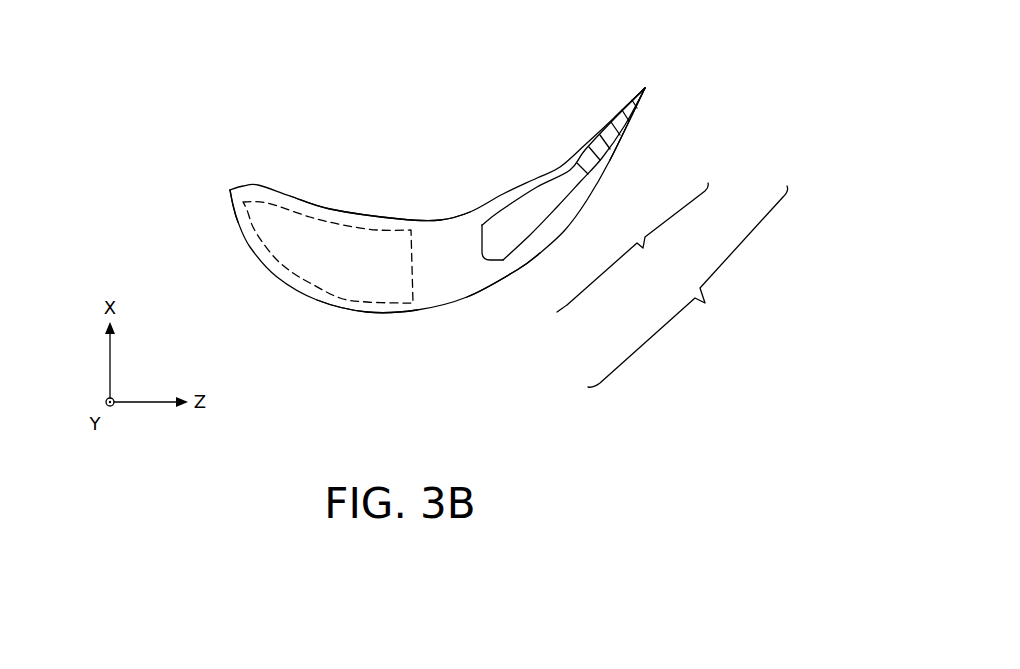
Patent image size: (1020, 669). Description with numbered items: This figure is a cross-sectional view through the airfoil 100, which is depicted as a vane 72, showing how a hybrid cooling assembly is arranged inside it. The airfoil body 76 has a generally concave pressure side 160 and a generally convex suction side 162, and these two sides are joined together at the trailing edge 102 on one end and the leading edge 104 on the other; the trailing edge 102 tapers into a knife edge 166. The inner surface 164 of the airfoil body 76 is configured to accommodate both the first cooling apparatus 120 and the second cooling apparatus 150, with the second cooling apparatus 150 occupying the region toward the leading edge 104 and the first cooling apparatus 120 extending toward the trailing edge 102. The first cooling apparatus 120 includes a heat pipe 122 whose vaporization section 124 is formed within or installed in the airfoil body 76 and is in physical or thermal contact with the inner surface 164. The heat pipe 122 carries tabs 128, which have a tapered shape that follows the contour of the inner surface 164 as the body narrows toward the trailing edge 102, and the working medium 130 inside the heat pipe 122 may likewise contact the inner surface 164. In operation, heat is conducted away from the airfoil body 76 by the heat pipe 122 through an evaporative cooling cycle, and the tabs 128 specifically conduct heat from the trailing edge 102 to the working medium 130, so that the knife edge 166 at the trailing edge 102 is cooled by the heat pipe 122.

The airfoil 100 is at (397, 174).
The vane 72 is at (209, 116).
The leading edge 104 is at (230, 190).
The trailing edge 102 is at (645, 88).
The knife edge 166 is at (620, 77).
The pressure side 160 is at (333, 211).
The airfoil body 76 is at (424, 219).
The suction side 162 is at (352, 311).
The second cooling apparatus 150 is at (310, 252).
The working medium 130 is at (499, 236).
The tabs 128 is at (617, 146).
The inner surface 164 is at (557, 207).
The heat pipe 122 is at (512, 287).
The vaporization section 124 is at (632, 247).
The first cooling apparatus 120 is at (688, 286).